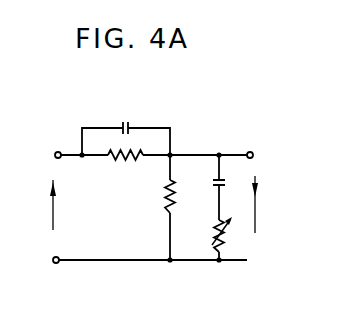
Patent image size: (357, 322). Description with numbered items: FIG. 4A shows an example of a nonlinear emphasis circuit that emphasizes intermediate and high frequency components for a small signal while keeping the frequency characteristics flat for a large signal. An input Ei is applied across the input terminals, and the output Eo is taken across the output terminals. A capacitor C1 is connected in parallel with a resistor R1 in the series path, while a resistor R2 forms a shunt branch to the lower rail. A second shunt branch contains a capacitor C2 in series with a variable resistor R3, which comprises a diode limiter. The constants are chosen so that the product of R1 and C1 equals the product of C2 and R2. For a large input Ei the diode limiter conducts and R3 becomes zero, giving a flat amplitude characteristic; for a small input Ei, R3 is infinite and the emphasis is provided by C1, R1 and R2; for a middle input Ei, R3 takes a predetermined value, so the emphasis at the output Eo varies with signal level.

The capacitor C1 is at (130, 112).
The resistor R1 is at (126, 172).
The resistor R2 is at (158, 202).
The capacitor C2 is at (234, 182).
The variable resistor R3 is at (234, 237).
The input Ei is at (65, 205).
The output Eo is at (270, 200).